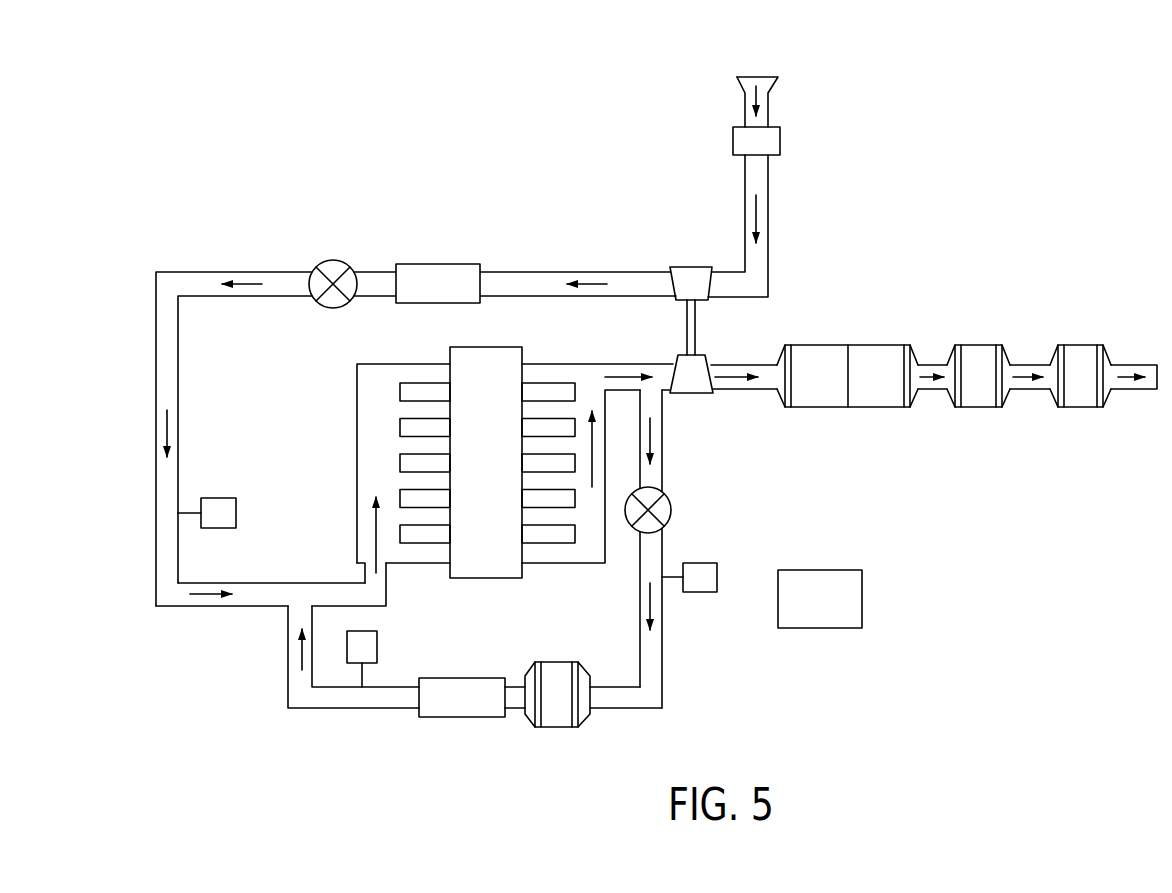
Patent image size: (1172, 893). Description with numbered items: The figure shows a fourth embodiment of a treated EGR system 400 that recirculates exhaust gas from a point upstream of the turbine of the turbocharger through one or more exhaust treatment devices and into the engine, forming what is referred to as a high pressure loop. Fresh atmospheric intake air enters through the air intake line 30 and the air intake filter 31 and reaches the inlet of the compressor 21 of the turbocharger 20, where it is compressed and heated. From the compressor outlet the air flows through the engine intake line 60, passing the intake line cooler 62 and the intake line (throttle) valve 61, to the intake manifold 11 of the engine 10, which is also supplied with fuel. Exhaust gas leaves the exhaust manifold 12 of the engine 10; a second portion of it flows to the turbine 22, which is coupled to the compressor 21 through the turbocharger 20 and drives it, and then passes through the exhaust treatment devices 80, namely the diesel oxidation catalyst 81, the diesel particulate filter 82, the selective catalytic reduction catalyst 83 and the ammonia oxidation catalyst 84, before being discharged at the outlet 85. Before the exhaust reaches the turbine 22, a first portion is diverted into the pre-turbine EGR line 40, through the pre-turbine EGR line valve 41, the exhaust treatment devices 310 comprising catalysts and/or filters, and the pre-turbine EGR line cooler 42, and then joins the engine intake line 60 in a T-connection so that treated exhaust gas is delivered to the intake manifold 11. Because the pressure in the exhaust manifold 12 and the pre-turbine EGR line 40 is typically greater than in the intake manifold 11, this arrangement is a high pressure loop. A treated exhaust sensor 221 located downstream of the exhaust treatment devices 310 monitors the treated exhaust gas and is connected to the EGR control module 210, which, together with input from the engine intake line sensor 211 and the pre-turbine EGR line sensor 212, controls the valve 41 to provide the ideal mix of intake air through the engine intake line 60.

The engine 10 is at (488, 347).
The intake manifold 11 is at (360, 414).
The exhaust manifold 12 is at (553, 372).
The turbocharger 20 is at (701, 341).
The compressor 21 is at (680, 265).
The turbine 22 is at (690, 395).
The air intake line 30 is at (742, 181).
The air intake filter 31 is at (733, 142).
The pre-turbine EGR line 40 is at (667, 470).
The pre-turbine EGR line valve 41 is at (672, 513).
The pre-turbine EGR line cooler 42 is at (468, 678).
The engine intake line 60 is at (150, 380).
The intake line (throttle) valve 61 is at (327, 260).
The intake line cooler 62 is at (418, 264).
The exhaust treatment devices 80 is at (1113, 342).
The diesel oxidation catalyst (DOC) 81 is at (800, 397).
The diesel particulate filter (DPF) 82 is at (878, 397).
The selective catalytic reduction catalyst (SCR) 83 is at (975, 407).
The ammonia oxidation catalyst (AOC) 84 is at (1080, 407).
The outlet 85 is at (1135, 367).
The EGR control module 210 is at (818, 570).
The engine intake line sensor 211 is at (219, 498).
The pre-turbine EGR line sensor 212 is at (711, 592).
The treated exhaust sensor 221 is at (378, 646).
The exhaust treatment devices 310 is at (556, 662).
The treated EGR system 400 is at (699, 678).